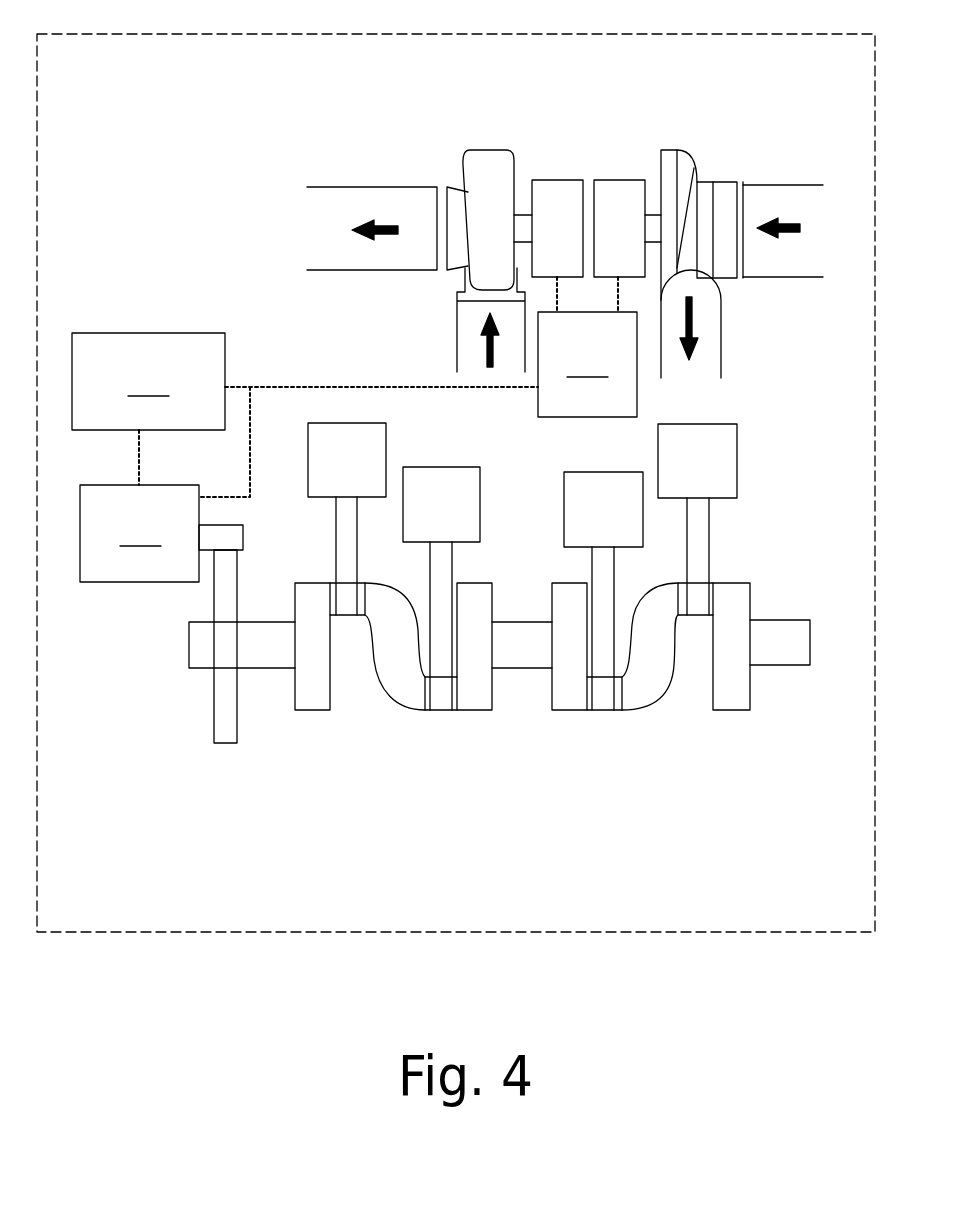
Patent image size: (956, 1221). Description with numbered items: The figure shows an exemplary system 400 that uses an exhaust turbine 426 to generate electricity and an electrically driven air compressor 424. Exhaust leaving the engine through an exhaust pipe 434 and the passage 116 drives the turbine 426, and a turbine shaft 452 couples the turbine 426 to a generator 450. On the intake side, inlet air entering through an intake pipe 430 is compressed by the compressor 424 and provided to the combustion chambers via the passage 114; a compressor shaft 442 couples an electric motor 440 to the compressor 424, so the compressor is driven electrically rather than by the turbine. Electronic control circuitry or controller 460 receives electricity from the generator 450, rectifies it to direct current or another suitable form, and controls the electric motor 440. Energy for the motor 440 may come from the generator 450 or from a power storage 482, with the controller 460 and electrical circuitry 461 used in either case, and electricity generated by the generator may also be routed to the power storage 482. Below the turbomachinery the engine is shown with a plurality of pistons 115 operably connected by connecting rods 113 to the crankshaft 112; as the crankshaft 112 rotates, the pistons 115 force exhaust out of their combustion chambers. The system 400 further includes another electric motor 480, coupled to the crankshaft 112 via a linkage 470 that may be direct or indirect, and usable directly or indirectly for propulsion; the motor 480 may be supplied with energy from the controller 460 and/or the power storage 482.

The system 400 is at (723, 34).
The exhaust pipe 434 is at (397, 187).
The exhaust turbine 426 is at (497, 148).
The turbine shaft 452 is at (527, 213).
The generator 450 is at (545, 177).
The electric motor 440 is at (630, 180).
The compressor shaft 442 is at (651, 213).
The compressor 424 is at (680, 150).
The intake pipe 430 is at (773, 184).
The passage 116 is at (457, 338).
The electronic control circuitry 460 is at (587, 364).
The passage 114 is at (721, 327).
The power storage 482 is at (148, 409).
The electrical circuitry 461 is at (357, 387).
The electric motor 480 is at (139, 533).
The linkage 470 is at (213, 715).
The piston 115 is at (738, 463).
The connecting rod 113 is at (710, 555).
The crankshaft 112 is at (763, 618).